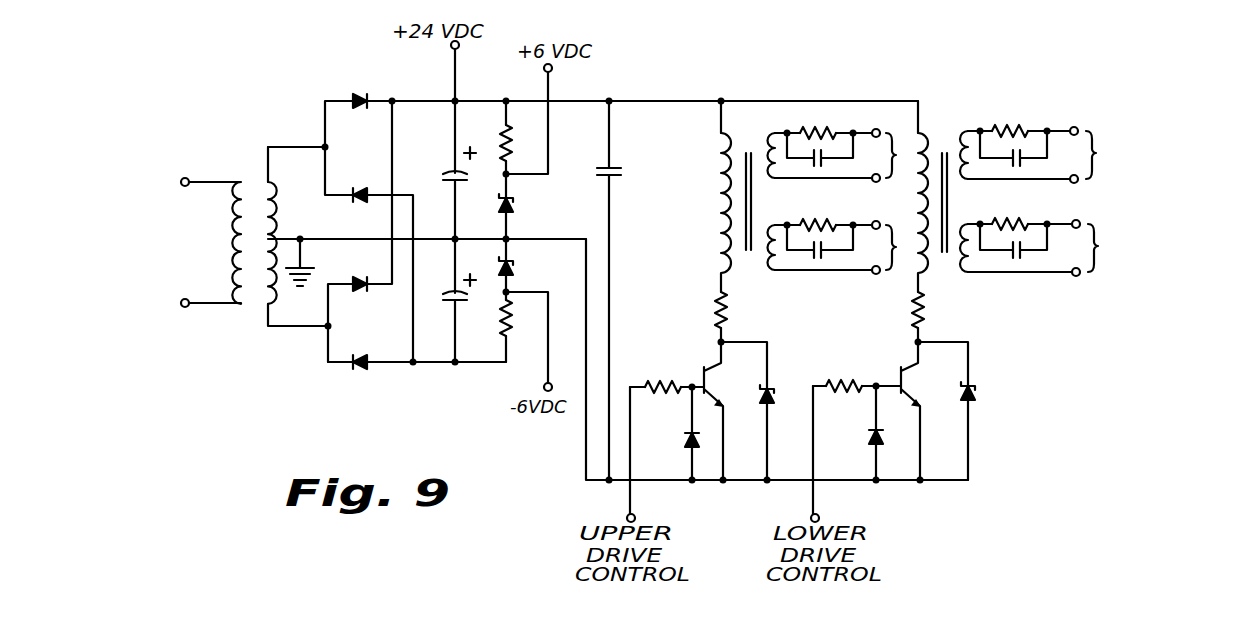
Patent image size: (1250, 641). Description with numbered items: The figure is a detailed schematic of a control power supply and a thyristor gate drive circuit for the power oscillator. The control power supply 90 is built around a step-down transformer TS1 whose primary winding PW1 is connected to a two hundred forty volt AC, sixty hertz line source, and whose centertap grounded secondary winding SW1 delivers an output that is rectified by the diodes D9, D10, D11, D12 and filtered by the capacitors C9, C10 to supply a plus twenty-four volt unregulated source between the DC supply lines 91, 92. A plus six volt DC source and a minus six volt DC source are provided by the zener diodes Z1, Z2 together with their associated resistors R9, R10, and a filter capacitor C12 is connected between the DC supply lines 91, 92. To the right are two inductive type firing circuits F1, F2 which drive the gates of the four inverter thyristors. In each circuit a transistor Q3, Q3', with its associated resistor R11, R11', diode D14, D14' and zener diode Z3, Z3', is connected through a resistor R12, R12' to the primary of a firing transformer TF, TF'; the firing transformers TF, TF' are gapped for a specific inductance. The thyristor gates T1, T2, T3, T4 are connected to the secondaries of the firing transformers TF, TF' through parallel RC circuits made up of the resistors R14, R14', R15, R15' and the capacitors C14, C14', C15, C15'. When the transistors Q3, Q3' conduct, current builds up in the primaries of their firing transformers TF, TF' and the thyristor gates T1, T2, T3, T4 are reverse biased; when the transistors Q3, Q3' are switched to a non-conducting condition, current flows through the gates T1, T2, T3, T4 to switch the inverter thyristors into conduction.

The control power supply 90 is at (318, 44).
The DC supply line 91 is at (505, 101).
The DC supply line 92 is at (551, 240).
The step-down transformer TS1 is at (252, 167).
The primary winding PW1 is at (240, 305).
The secondary winding SW1 is at (278, 231).
The diode D9 is at (360, 96).
The diode D10 is at (362, 190).
The diode D11 is at (362, 290).
The diode D12 is at (362, 370).
The capacitor C9 is at (445, 172).
The capacitor C10 is at (450, 293).
The resistor R9 is at (504, 130).
The resistor R10 is at (504, 320).
The zener diode Z1 is at (516, 203).
The zener diode Z2 is at (520, 269).
The filter capacitor C12 is at (620, 177).
The inductive type firing circuit F1 is at (826, 79).
The inductive type firing circuit F2 is at (1018, 82).
The firing transformer TF is at (748, 199).
The firing transformer TF' is at (943, 195).
The thyristor gate T1 is at (846, 155).
The thyristor gate T2 is at (1092, 150).
The thyristor gate T3 is at (847, 247).
The thyristor gate T4 is at (1096, 266).
The resistor R14 is at (836, 122).
The resistor R15 is at (806, 211).
The capacitor C14 is at (831, 173).
The capacitor C15 is at (828, 269).
The resistor R14' is at (1021, 117).
The resistor R15' is at (998, 211).
The capacitor C14' is at (1032, 175).
The capacitor C15' is at (1013, 268).
The resistor R12 is at (754, 317).
The resistor R12' is at (951, 317).
The transistor Q3 is at (690, 402).
The transistor Q3' is at (884, 404).
The zener diode Z3 is at (762, 413).
The zener diode Z3' is at (982, 411).
The resistor R11 is at (655, 404).
The resistor R11' is at (839, 403).
The diode D14 is at (669, 434).
The diode D14' is at (853, 433).